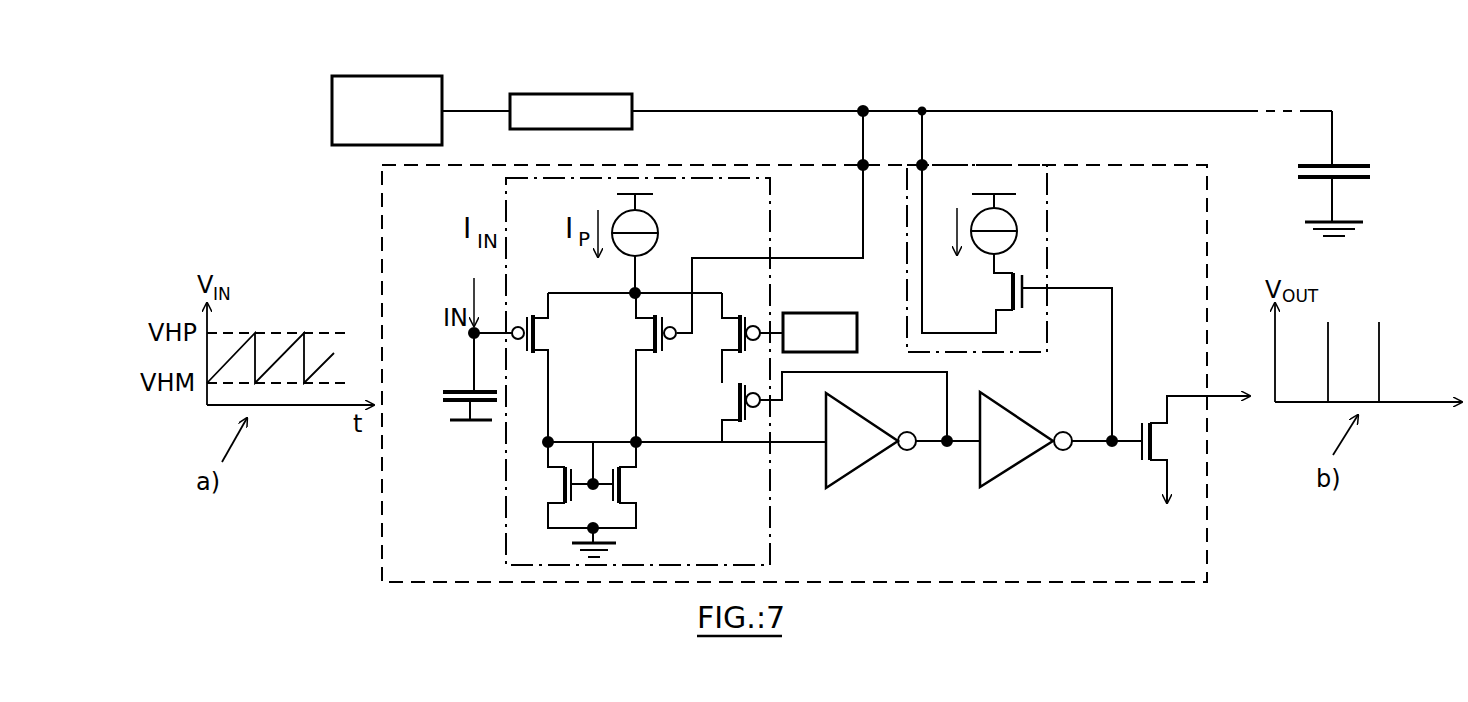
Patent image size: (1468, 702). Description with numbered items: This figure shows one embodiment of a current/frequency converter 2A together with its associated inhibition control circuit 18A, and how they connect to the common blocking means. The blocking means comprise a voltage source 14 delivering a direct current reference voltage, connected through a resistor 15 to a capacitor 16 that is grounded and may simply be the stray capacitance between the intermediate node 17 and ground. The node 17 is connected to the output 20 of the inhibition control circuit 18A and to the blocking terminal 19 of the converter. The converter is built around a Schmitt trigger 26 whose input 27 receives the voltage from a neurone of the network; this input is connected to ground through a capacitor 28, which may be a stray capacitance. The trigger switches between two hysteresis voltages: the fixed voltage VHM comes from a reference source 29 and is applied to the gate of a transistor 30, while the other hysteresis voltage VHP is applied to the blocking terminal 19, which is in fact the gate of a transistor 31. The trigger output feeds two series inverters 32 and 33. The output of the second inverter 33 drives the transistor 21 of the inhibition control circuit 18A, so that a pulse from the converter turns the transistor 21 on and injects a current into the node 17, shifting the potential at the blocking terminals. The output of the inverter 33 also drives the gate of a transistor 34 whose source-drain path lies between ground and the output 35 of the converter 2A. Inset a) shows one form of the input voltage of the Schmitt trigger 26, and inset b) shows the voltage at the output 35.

The voltage source 14 is at (395, 77).
The resistor 15 is at (525, 105).
The capacitor 16 is at (1345, 165).
The node 17 is at (870, 108).
The inhibition control circuit 18A is at (1047, 215).
The blocking terminal 19 is at (858, 163).
The output 20 is at (926, 163).
The transistor 21 is at (1010, 212).
The Schmitt trigger 26 is at (772, 528).
The input 27 is at (470, 338).
The capacitor 28 is at (455, 405).
The reference source 29 is at (808, 312).
The transistor 30 is at (734, 312).
The transistor 31 is at (640, 355).
The inverter 32 is at (855, 447).
The inverter 33 is at (1005, 445).
The transistor 34 is at (1158, 440).
The output 35 is at (1215, 393).
The converter 2A is at (1048, 583).